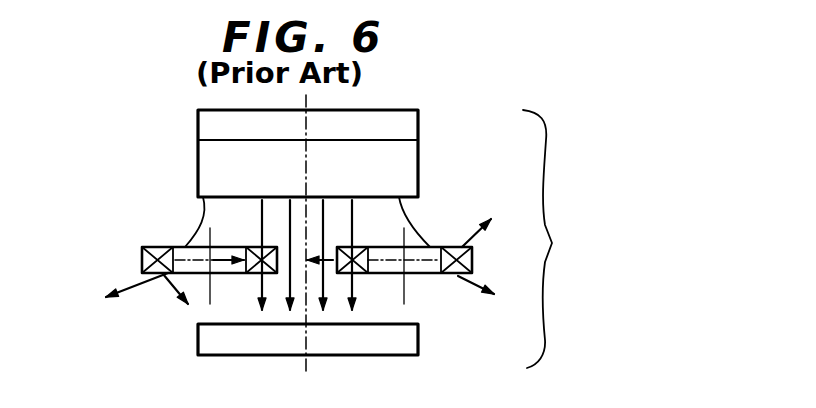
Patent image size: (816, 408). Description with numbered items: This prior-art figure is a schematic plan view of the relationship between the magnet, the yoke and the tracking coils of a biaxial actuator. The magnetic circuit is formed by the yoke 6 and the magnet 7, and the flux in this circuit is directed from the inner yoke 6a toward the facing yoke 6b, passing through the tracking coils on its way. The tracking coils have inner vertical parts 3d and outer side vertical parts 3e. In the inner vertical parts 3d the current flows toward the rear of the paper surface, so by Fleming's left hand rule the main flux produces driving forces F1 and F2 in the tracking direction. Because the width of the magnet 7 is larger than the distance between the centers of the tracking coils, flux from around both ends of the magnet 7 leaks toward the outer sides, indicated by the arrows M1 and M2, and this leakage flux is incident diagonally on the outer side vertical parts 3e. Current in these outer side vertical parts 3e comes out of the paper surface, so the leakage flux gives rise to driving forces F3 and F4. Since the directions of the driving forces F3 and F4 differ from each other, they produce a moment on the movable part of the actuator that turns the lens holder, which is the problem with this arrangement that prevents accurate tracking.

The yoke 6 is at (549, 239).
The inner yoke 6a is at (400, 128).
The facing yoke 6b is at (402, 340).
The magnet 7 is at (213, 162).
The leakage flux toward outer side M1 is at (415, 228).
The leakage flux toward outer side M2 is at (198, 221).
The outer side vertical part 3e is at (142, 256).
The inner vertical part 3d is at (256, 247).
The driving force F1 is at (236, 275).
The driving force F2 is at (328, 274).
The driving force F3 is at (165, 284).
The driving force F4 is at (463, 235).